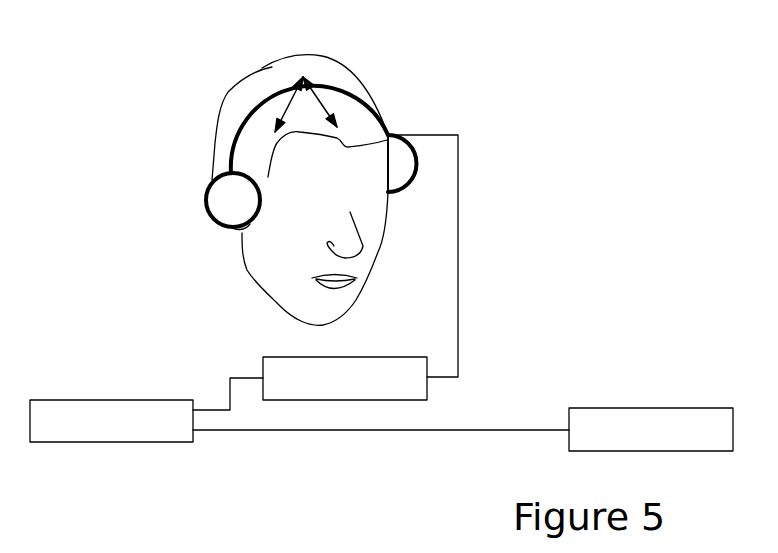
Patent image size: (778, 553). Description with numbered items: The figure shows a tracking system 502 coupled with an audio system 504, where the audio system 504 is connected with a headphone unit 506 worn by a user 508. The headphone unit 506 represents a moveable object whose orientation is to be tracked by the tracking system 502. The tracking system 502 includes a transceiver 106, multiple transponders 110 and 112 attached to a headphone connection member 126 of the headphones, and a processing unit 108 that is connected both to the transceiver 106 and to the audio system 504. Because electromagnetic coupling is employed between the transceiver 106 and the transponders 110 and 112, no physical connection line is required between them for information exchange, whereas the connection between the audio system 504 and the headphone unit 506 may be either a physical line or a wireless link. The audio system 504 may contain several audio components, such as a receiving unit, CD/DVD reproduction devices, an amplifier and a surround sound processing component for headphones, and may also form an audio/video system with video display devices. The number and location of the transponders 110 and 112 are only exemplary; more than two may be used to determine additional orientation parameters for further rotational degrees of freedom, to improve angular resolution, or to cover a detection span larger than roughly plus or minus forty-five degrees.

The transceiver 106 is at (713, 452).
The processing unit 108 is at (175, 444).
The transponder 110 is at (292, 103).
The transponder 112 is at (320, 100).
The headphone connection member 126 is at (386, 103).
The tracking system 502 is at (567, 193).
The audio system 504 is at (413, 400).
The headphone unit 506 is at (422, 163).
The user 508 is at (347, 313).